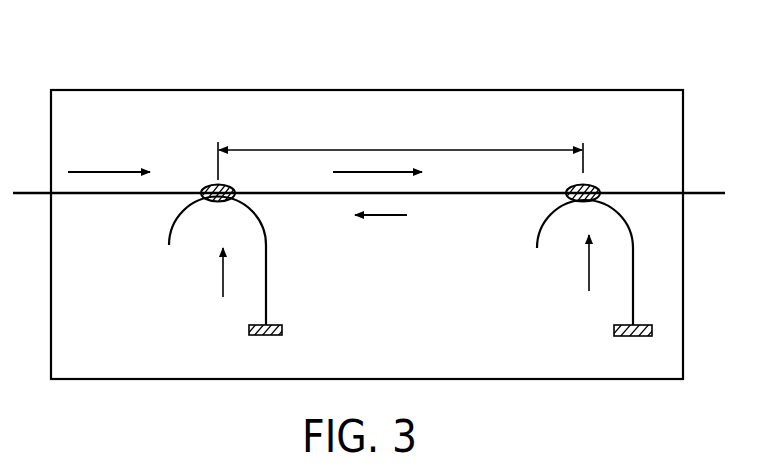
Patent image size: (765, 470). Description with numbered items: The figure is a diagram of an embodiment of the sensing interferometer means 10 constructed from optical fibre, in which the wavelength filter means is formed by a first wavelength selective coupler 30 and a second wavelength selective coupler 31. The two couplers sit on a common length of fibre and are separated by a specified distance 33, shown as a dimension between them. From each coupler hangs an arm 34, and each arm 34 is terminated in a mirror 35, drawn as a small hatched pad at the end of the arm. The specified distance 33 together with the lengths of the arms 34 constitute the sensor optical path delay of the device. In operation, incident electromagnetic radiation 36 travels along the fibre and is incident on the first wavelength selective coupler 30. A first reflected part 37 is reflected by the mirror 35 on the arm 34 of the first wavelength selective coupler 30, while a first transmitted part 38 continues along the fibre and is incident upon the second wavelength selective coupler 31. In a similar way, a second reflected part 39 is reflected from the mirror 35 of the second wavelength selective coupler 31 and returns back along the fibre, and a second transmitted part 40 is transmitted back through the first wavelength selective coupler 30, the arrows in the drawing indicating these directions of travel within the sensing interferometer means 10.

The sensing interferometer means 10 is at (598, 90).
The first wavelength selective coupler 30 is at (209, 186).
The second wavelength selective coupler 31 is at (596, 186).
The specified distance 33 is at (432, 150).
The arm 34 is at (266, 278).
The mirror 35 is at (282, 331).
The incident electromagnetic radiation 36 is at (115, 172).
The first reflected part 37 is at (223, 278).
The first transmitted part 38 is at (360, 172).
The second reflected part 39 is at (589, 274).
The second transmitted part 40 is at (390, 217).